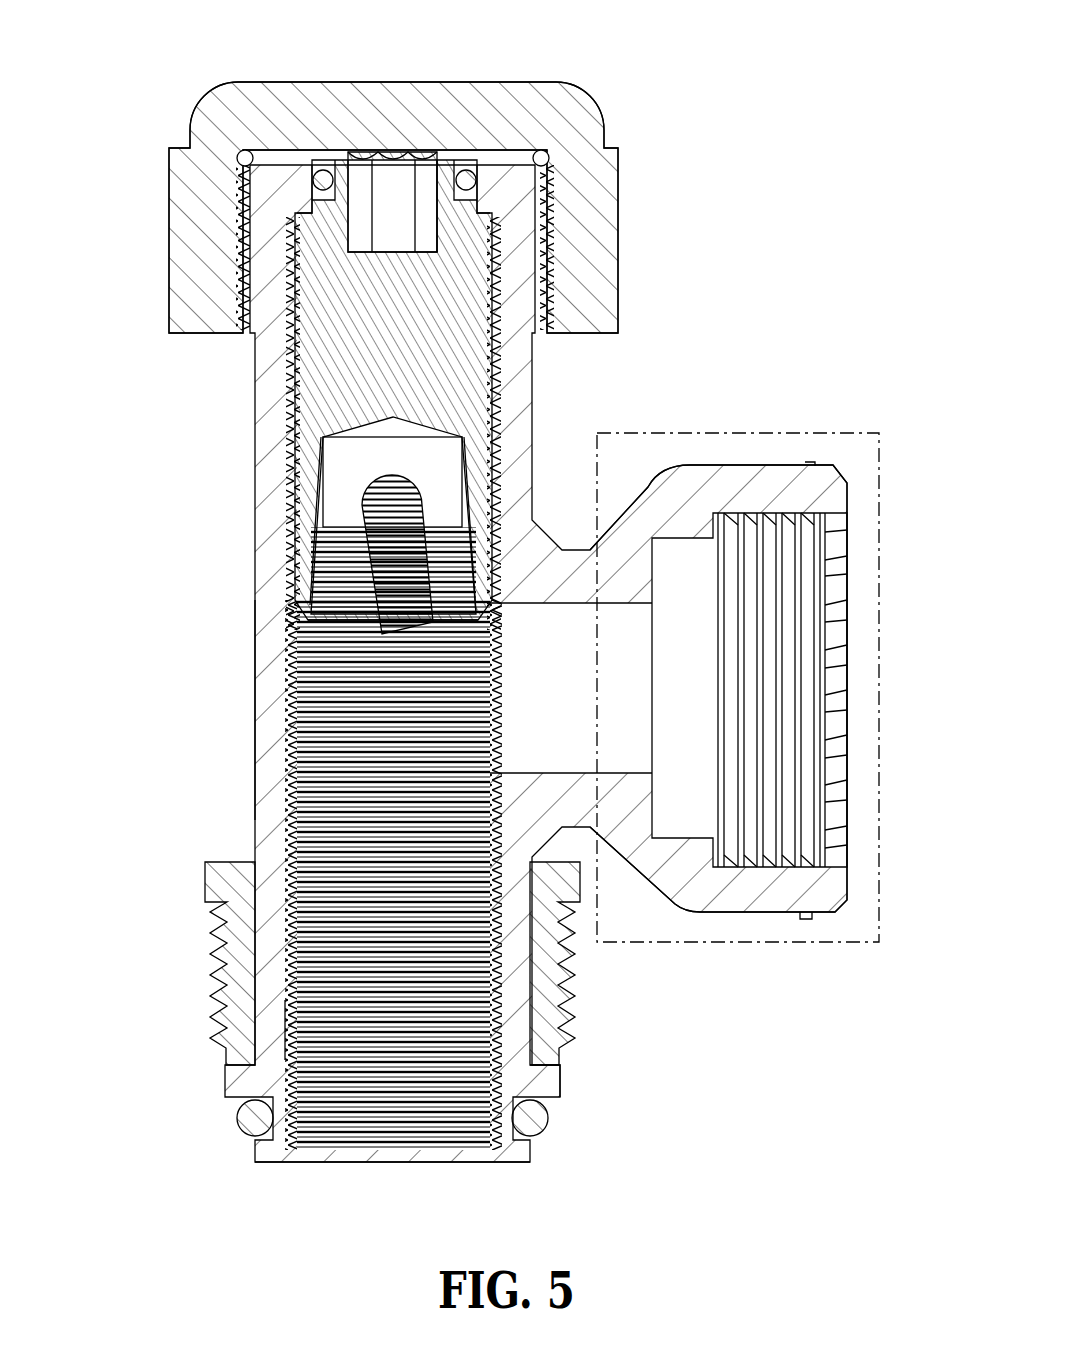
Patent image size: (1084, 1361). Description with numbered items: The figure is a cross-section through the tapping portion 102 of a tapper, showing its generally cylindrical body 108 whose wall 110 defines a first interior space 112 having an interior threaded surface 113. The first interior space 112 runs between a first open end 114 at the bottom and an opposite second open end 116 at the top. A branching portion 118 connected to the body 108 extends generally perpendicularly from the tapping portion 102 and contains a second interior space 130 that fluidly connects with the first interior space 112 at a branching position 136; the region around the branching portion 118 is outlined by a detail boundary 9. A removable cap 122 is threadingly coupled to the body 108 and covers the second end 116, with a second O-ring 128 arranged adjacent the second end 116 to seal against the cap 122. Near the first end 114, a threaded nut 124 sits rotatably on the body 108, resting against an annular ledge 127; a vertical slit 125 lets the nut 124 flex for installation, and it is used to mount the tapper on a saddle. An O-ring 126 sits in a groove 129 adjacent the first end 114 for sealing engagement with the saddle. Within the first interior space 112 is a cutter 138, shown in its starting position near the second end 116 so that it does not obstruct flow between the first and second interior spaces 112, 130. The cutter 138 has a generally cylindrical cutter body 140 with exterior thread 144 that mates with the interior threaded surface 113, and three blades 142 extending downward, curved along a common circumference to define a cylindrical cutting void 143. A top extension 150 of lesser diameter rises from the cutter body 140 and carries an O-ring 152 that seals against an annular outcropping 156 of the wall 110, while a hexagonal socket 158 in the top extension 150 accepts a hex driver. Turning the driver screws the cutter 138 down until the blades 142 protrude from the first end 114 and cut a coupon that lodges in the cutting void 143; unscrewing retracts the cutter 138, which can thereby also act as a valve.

The tapping portion 102 is at (132, 70).
The body 108 is at (498, 663).
The wall 110 is at (264, 720).
The first interior space 112 is at (344, 875).
The interior threaded surface 113 is at (285, 1030).
The first open end 114 is at (400, 1154).
The second open end 116 is at (415, 163).
The branching portion 118 is at (750, 490).
The removable cap 122 is at (402, 320).
The threaded nut 124 is at (562, 1005).
The vertical slit 125 is at (247, 945).
The O-ring 126 is at (542, 1130).
The annular ledge 127 is at (548, 1082).
The second O-ring 128 is at (544, 152).
The groove 129 is at (270, 1115).
The second interior space 130 is at (628, 652).
The branching position 136 is at (484, 690).
The cutter 138 is at (342, 316).
The cutter body 140 is at (342, 352).
The blades 142 is at (315, 572).
The cutting void 143 is at (390, 527).
The thread 144 is at (295, 256).
The top extension 150 is at (440, 198).
The O-ring 152 is at (322, 168).
The annular outcropping 156 is at (290, 176).
The hexagonal socket 158 is at (393, 172).
The detail region 9 is at (836, 942).